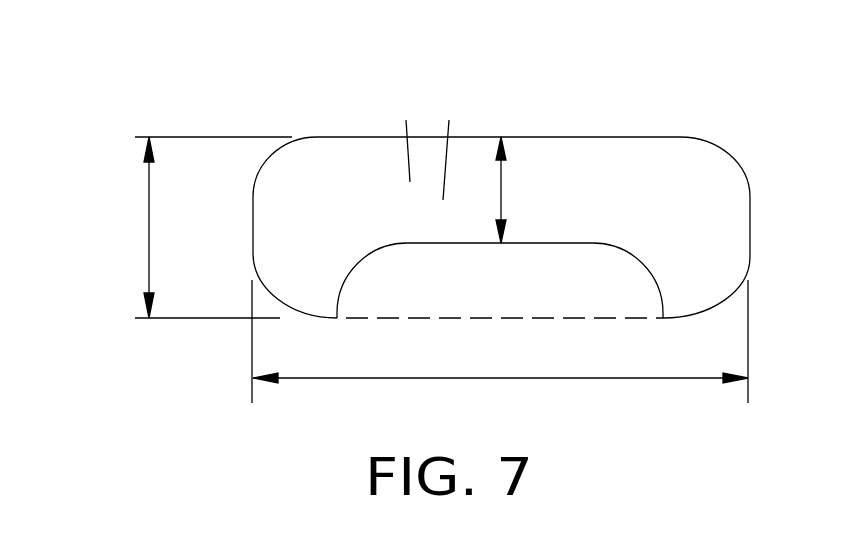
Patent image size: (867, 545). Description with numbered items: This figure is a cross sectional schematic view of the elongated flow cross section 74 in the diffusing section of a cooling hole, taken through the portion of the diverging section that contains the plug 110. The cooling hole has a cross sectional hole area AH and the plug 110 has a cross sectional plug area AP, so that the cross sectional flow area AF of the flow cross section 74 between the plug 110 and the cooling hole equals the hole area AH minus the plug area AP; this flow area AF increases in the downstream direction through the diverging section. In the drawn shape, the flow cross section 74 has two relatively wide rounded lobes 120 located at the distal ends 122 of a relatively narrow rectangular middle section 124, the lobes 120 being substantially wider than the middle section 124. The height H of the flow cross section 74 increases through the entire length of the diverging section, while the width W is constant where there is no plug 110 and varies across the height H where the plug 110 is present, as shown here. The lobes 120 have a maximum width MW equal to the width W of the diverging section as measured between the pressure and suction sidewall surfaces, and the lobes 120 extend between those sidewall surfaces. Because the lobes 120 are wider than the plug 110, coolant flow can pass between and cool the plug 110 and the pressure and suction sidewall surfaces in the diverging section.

The flow cross section 74 is at (501, 191).
The plug 110 is at (642, 263).
The rounded lobes 120 is at (272, 202).
The distal ends 122 is at (380, 177).
The rectangular middle section 124 is at (462, 137).
The cross sectional flow area AF is at (406, 120).
The cross sectional hole area AH is at (449, 120).
The cross sectional plug area AP is at (508, 280).
The width W is at (503, 202).
The height H is at (500, 378).
The maximum width MW is at (148, 227).